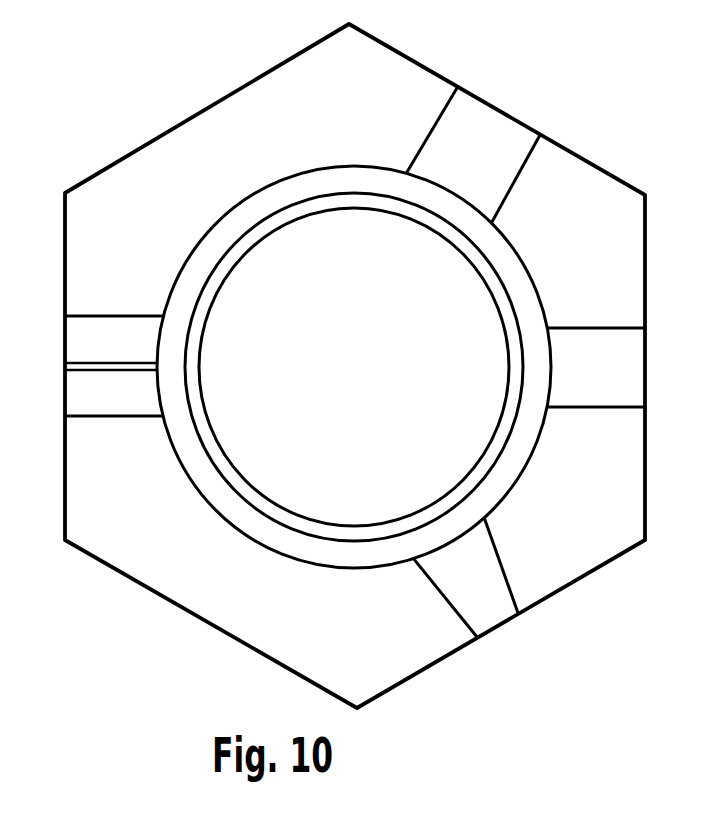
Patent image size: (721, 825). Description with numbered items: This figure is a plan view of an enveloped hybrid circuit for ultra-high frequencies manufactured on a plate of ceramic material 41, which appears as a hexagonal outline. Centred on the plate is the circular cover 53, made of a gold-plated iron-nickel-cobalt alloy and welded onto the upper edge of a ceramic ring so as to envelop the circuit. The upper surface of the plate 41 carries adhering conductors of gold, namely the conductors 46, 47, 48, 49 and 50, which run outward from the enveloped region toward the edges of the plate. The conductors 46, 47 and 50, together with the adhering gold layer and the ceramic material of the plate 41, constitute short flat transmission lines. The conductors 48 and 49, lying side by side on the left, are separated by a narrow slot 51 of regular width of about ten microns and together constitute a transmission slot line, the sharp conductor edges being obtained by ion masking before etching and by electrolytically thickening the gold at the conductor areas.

The plate of ceramic material 41 is at (205, 587).
The conductor 46 is at (623, 358).
The conductor 47 is at (487, 600).
The conductor 48 is at (83, 394).
The conductor 49 is at (87, 335).
The conductor 50 is at (503, 143).
The narrow slot 51 is at (66, 367).
The cover 53 is at (321, 185).